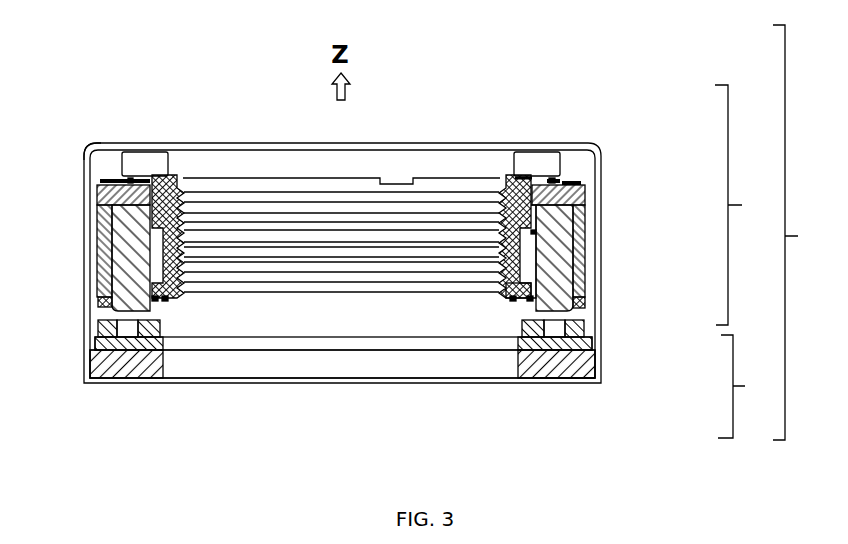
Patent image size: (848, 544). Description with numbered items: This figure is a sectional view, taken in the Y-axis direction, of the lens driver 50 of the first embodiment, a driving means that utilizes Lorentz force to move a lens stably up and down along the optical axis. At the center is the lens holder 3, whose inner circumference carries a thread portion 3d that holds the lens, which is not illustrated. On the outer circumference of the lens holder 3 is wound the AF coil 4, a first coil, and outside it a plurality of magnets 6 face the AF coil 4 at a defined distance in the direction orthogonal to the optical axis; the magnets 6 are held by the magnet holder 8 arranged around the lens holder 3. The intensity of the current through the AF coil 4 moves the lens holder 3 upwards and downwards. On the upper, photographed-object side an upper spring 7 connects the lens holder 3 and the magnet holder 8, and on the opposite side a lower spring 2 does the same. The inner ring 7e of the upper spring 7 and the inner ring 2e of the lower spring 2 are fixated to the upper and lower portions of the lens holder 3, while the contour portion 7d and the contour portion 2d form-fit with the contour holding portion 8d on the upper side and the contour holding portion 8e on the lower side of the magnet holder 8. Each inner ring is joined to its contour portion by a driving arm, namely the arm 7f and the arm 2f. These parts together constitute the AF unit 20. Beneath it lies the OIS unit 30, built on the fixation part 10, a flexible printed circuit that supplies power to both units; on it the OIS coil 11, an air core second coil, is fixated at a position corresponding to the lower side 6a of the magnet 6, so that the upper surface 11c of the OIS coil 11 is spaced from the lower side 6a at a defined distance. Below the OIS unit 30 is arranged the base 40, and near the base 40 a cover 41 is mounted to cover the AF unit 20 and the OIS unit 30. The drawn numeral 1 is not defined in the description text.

The battery cell 1 is at (90, 322).
The lower spring 2 is at (97, 310).
The contour portion of the lower spring 2d is at (581, 302).
The inner ring of the lower spring 2e is at (513, 298).
The arm of the lower spring 2f is at (530, 298).
The lens holder 3 is at (173, 177).
The thread portion 3d is at (505, 296).
The AF coil 4 is at (533, 233).
The magnet 6 is at (560, 255).
The lower side of the magnet 6a is at (546, 352).
The upper spring 7 is at (113, 178).
The contour portion of the upper spring 7d is at (570, 184).
The inner ring of the upper spring 7e is at (549, 179).
The arm of the upper spring 7f is at (558, 182).
The magnet holder 8 is at (599, 234).
The contour holding portion 8d is at (82, 165).
The contour holding portion 8e is at (100, 302).
The fixation part 10 is at (597, 355).
The OIS coil 11 is at (592, 342).
The upper surface of the OIS coil 11c is at (147, 320).
The AF unit 20 is at (747, 205).
The OIS unit 30 is at (748, 386).
The base 40 is at (568, 372).
The cover 41 is at (535, 174).
The lens driver 50 is at (804, 232).